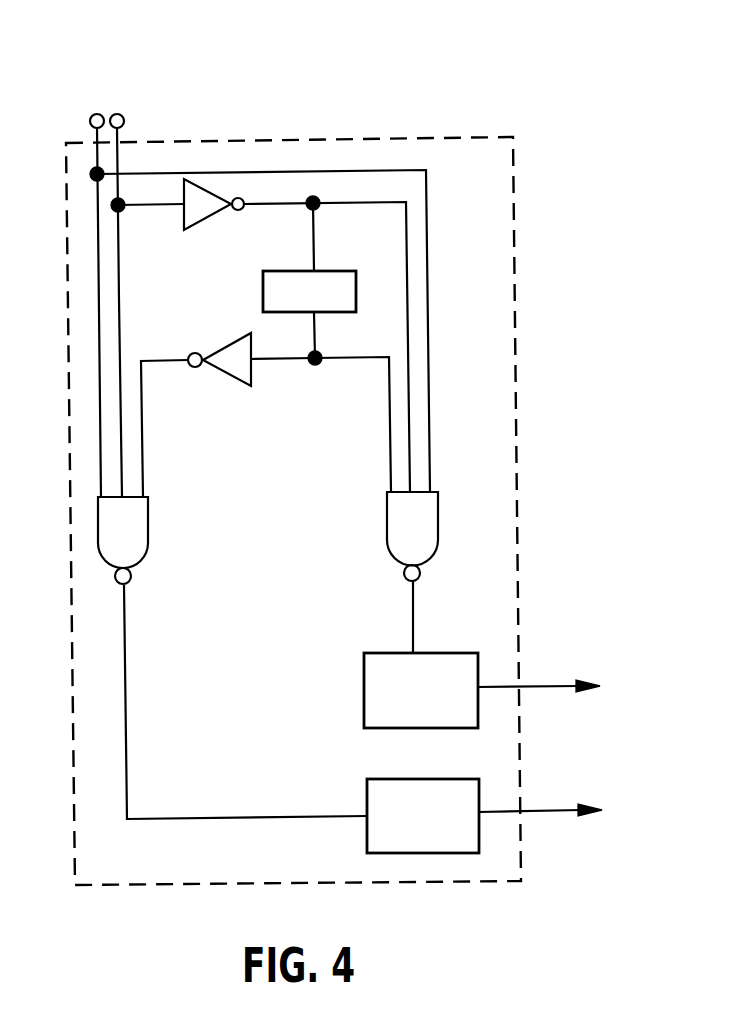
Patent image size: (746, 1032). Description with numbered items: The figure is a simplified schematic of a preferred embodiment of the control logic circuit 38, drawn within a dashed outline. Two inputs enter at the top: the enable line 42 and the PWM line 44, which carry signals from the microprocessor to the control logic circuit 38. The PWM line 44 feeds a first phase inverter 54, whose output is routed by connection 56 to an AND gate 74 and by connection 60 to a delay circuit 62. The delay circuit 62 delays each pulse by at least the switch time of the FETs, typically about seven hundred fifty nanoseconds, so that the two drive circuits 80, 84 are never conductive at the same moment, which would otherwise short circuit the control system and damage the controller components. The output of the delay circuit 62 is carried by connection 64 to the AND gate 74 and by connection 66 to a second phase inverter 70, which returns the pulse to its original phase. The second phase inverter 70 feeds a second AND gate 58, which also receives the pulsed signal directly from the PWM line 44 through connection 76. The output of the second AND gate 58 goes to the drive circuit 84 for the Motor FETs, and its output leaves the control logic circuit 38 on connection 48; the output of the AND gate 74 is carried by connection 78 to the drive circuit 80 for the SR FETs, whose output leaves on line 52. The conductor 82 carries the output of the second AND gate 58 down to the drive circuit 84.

The control logic circuit 38 is at (513, 265).
The enable line 42 is at (96, 114).
The PWM line 44 is at (120, 114).
The connection 48 is at (592, 805).
The second output 52 is at (588, 683).
The first phase inverter 54 is at (185, 216).
The connection 56 is at (352, 203).
The second AND gate 58 is at (148, 515).
The connection 60 is at (314, 228).
The delay circuit 62 is at (281, 271).
The connection 64 is at (355, 358).
The connection 66 is at (263, 362).
The second phase inverter 70 is at (218, 372).
The AND gate 74 is at (387, 522).
The connection 76 is at (121, 315).
The connection 78 is at (413, 625).
The drive circuit 80 is at (440, 653).
The conductor 82 is at (126, 670).
The drive circuit 84 is at (381, 779).